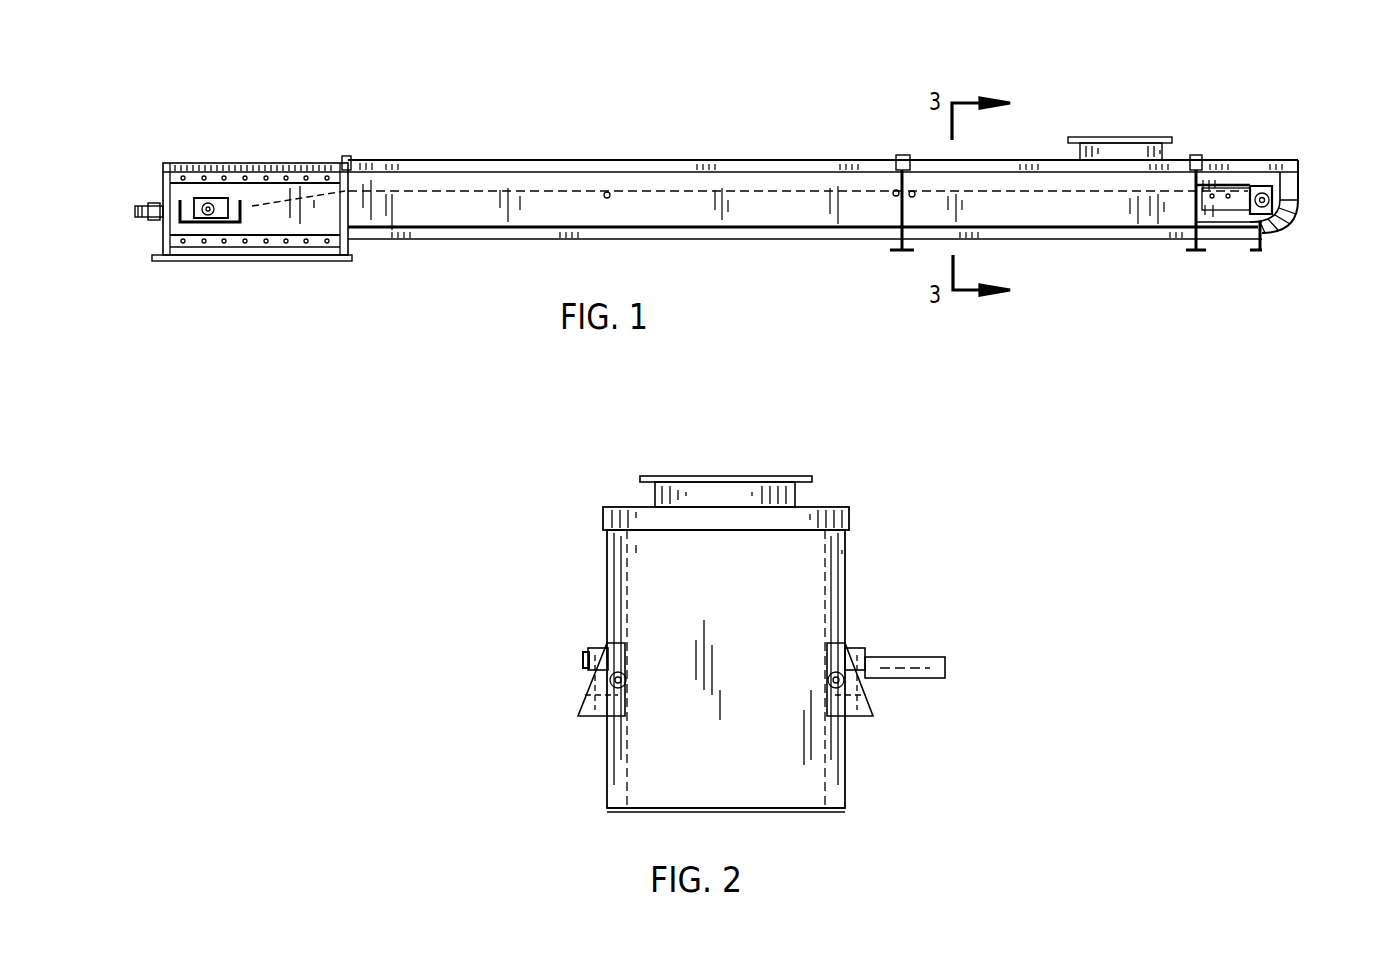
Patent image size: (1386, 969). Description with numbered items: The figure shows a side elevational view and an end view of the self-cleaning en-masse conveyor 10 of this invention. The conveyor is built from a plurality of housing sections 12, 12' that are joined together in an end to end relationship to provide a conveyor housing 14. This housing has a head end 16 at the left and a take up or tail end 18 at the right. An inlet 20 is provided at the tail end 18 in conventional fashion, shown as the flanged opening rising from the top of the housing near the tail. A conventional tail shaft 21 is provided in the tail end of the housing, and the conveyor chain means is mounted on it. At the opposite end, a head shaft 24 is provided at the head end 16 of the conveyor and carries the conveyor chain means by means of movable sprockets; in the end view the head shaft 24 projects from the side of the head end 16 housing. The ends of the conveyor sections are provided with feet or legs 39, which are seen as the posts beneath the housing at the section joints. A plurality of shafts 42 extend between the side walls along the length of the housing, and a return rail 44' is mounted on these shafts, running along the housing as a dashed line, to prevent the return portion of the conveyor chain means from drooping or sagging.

In FIG. 1, the self-cleaning en-masse conveyor 10 is at (632, 100).
In FIG. 2, the self-cleaning en-masse conveyor 10 is at (908, 530).
In FIG. 1, the housing section 12 is at (823, 170).
In FIG. 1, the housing section 12' is at (1036, 126).
In FIG. 1, the conveyor housing 14 is at (485, 255).
In FIG. 1, the head end 16 is at (153, 193).
In FIG. 2, the head end 16 is at (655, 601).
In FIG. 1, the take up or tail end 18 is at (1308, 190).
In FIG. 1, the inlet 20 is at (1240, 152).
In FIG. 1, the tail shaft 21 is at (1263, 190).
In FIG. 1, the head shaft 24 is at (215, 203).
In FIG. 2, the head shaft 24 is at (905, 657).
In FIG. 1, the feet or legs 39 is at (893, 250).
In FIG. 1, the shafts 42 is at (609, 198).
In FIG. 1, the return rail 44' is at (750, 148).